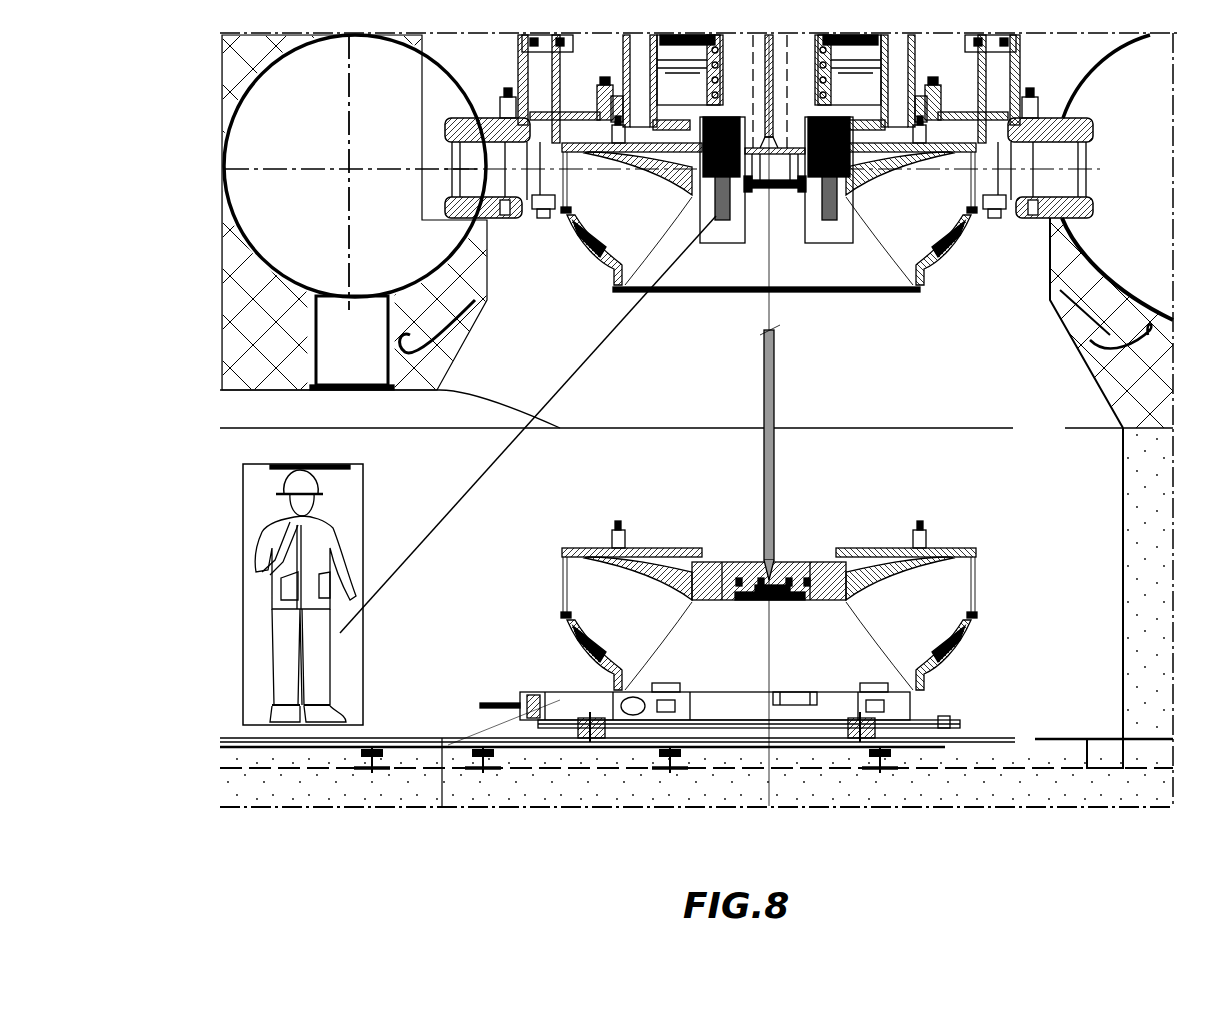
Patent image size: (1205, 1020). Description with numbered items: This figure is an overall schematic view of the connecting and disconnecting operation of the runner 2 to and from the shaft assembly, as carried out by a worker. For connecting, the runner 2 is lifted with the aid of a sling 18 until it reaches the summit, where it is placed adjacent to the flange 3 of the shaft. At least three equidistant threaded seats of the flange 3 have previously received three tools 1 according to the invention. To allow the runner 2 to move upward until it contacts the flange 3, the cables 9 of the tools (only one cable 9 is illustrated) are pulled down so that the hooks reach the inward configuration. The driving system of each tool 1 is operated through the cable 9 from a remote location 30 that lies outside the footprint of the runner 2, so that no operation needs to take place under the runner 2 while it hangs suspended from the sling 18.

The tool 1 is at (833, 233).
The runner 2 is at (946, 263).
The flange of the shaft 3 is at (710, 133).
The cable 9 is at (487, 492).
The sling 18 is at (769, 452).
The remote location 30 is at (303, 580).